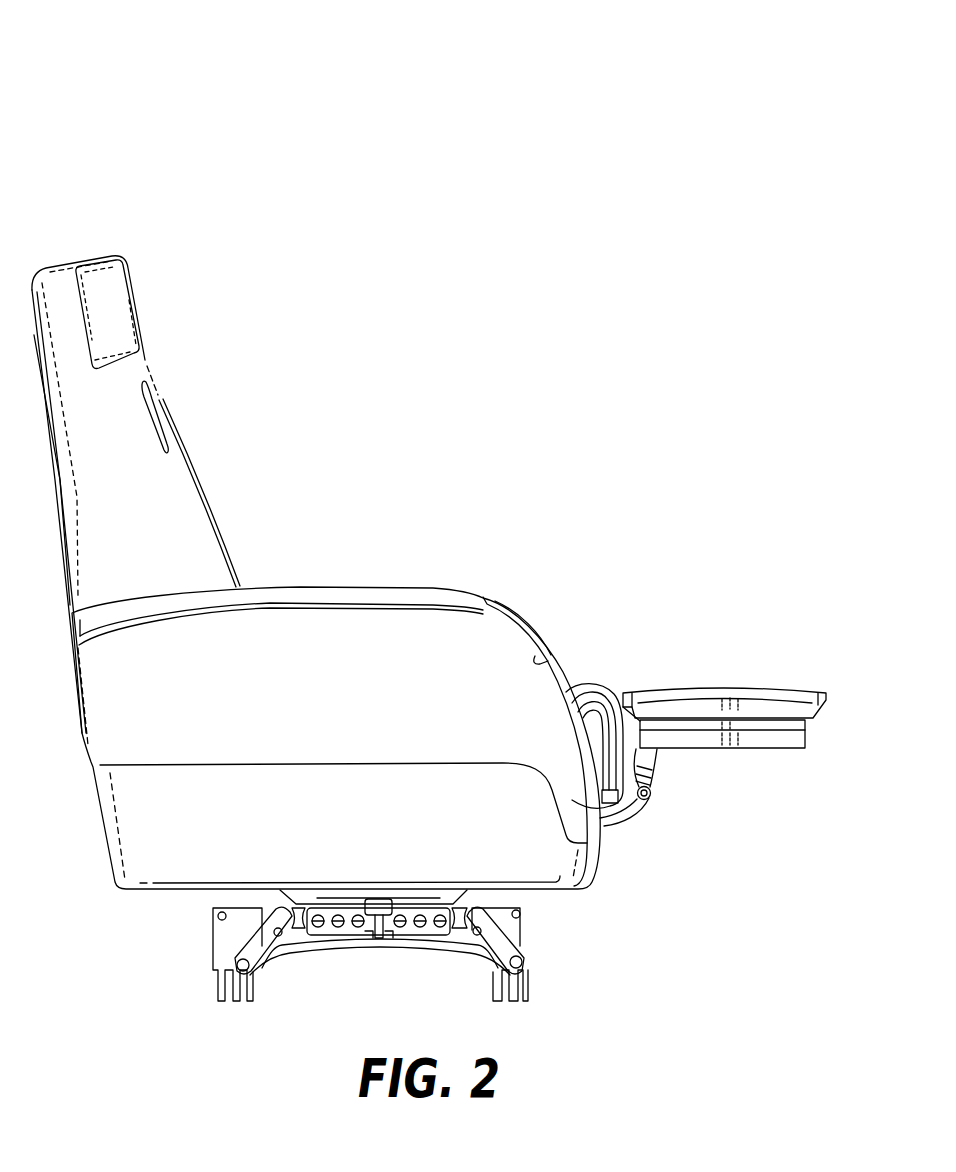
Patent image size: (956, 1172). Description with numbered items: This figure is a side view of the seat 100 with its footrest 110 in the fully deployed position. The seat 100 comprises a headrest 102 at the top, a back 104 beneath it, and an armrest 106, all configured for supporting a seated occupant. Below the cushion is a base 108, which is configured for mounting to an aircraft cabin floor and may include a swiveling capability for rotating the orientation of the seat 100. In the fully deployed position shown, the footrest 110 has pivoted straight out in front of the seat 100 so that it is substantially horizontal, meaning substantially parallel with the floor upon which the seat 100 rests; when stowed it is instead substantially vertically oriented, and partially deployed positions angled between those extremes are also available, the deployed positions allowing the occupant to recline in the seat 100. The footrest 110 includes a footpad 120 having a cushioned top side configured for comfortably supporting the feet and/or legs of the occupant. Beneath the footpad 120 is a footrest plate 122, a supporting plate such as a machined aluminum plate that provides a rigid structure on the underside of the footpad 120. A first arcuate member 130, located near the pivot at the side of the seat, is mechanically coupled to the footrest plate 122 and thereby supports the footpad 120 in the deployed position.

The seat 100 is at (162, 116).
The headrest 102 is at (151, 312).
The back 104 is at (219, 465).
The armrest 106 is at (443, 565).
The base 108 is at (180, 966).
The footrest 110 is at (742, 616).
The footpad 120 is at (790, 703).
The footrest plate 122 is at (787, 749).
The first arcuate member 130 is at (657, 752).